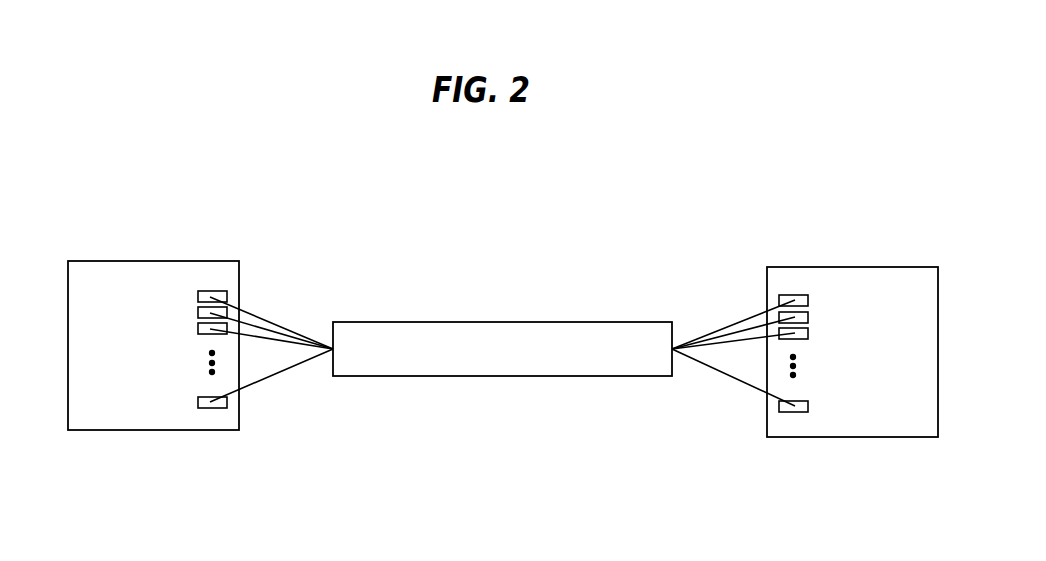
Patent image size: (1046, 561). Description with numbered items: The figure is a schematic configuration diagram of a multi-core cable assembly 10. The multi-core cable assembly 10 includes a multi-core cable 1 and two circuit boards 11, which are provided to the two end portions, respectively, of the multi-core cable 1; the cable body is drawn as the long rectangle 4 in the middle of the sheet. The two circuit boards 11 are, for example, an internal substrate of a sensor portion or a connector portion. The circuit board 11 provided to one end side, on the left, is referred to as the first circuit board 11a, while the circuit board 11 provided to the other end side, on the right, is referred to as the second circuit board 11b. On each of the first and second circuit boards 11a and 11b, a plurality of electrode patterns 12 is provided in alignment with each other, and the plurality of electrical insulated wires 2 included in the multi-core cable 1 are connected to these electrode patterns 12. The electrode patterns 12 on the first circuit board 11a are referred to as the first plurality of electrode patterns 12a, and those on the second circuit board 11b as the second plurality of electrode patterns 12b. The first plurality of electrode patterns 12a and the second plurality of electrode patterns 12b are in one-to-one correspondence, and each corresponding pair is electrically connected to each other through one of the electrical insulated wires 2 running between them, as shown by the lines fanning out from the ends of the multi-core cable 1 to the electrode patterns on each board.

The multi-core cable assembly 10 is at (621, 245).
The circuit board 11 is at (84, 245).
The first circuit board 11a is at (162, 261).
The second circuit board 11b is at (851, 267).
The electrode pattern 12 is at (196, 414).
The first plurality of electrode patterns 12a is at (214, 291).
The second plurality of electrode patterns 12b is at (797, 295).
The multi-core cable 1 is at (380, 305).
The cable body 4 is at (467, 335).
The electrical insulated wire 2 is at (273, 325).